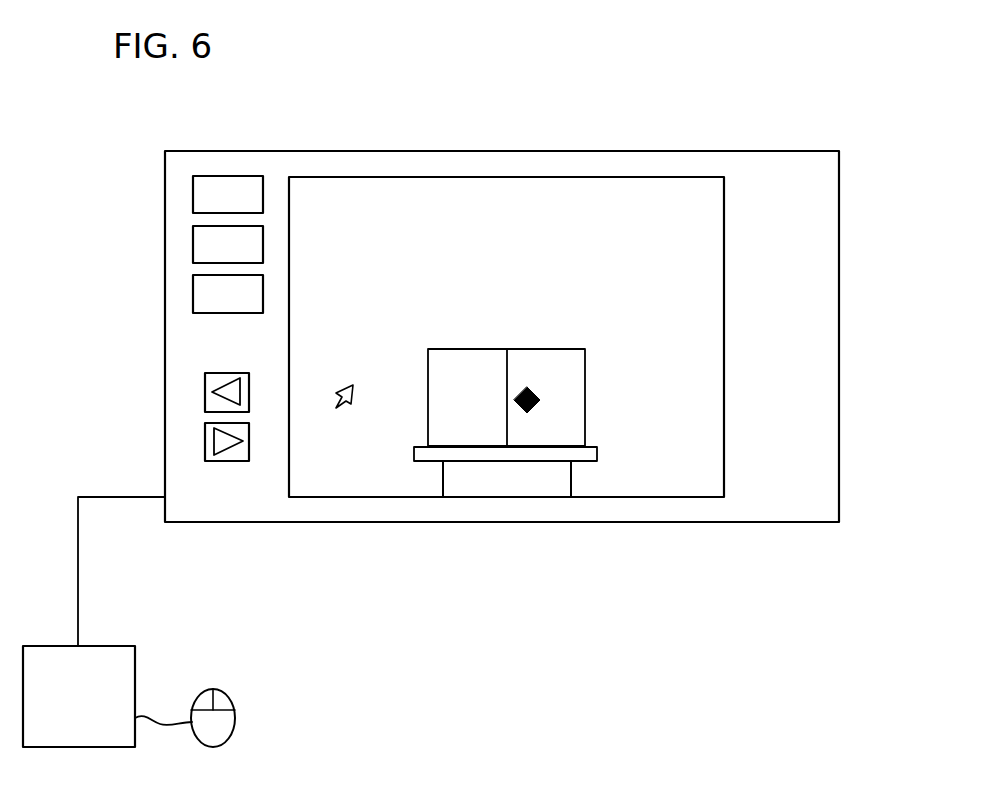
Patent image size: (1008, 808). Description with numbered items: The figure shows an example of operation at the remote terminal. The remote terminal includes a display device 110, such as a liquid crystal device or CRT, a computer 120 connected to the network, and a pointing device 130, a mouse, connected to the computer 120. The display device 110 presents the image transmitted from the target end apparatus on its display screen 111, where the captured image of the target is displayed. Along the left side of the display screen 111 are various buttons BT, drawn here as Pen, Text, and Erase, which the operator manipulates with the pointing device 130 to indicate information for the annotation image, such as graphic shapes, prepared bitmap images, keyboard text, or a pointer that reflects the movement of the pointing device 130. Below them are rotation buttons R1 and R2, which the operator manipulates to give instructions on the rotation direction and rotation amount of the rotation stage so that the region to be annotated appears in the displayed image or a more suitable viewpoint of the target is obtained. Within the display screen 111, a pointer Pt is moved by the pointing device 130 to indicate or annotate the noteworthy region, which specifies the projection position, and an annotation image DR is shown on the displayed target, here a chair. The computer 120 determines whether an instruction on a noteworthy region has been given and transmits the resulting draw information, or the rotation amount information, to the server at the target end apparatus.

The display device 110 is at (791, 144).
The display screen 111 is at (827, 264).
The buttons BT is at (193, 193).
The rotation button R1 is at (205, 392).
The rotation button R2 is at (205, 441).
The pointer Pt is at (346, 406).
The annotation image DR is at (525, 414).
The computer 120 is at (119, 645).
The pointing device 130 is at (226, 694).